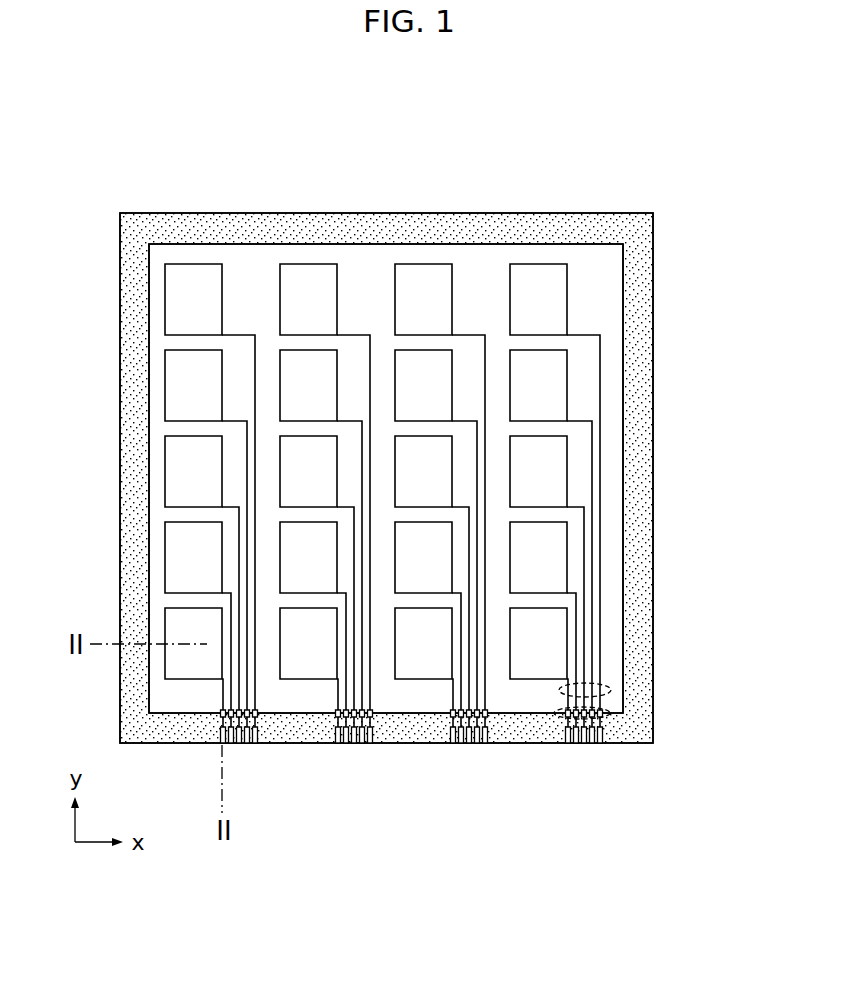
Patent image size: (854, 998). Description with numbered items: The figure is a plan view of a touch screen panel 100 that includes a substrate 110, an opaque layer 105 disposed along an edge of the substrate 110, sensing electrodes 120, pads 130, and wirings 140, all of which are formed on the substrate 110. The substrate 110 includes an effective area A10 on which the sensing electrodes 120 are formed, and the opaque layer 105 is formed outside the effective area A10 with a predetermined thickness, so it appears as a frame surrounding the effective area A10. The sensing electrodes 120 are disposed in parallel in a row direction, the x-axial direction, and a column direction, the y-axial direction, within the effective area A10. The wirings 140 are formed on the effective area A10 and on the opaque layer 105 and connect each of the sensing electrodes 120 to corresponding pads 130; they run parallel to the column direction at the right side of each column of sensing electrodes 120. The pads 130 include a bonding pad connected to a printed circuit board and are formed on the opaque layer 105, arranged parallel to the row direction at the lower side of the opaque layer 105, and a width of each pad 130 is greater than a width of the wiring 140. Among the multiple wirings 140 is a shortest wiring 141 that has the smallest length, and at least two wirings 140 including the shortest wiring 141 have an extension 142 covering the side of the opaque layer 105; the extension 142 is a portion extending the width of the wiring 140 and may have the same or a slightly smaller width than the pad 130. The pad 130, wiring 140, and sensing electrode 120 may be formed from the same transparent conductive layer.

The touch screen panel 100 is at (363, 139).
The substrate 110 is at (668, 333).
The opaque layer 105 is at (638, 397).
The effective area A10 is at (610, 264).
The sensing electrodes 120 is at (168, 371).
The pads 130 is at (257, 745).
The wirings 140 is at (612, 690).
The shortest wiring 141 is at (223, 693).
The extension 142 is at (268, 702).